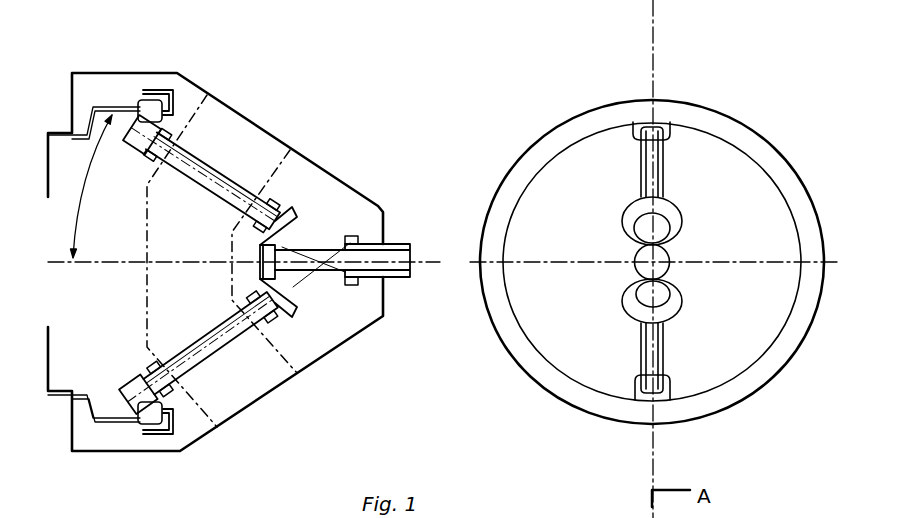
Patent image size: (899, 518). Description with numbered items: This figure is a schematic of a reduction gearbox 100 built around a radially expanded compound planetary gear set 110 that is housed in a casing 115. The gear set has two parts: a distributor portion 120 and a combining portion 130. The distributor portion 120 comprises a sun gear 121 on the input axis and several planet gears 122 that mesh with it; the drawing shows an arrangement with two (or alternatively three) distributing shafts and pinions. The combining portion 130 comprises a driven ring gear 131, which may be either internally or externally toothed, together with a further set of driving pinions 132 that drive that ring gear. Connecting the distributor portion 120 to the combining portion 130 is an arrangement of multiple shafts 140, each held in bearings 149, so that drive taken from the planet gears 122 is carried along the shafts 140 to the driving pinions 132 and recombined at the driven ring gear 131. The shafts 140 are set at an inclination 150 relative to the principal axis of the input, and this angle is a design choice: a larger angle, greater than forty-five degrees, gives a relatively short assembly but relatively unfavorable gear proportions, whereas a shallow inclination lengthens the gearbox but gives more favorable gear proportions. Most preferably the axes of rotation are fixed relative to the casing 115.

The reduction gearbox 100 is at (240, 114).
The compound planetary gear set 110 is at (123, 386).
The casing 115 is at (292, 372).
The distributor portion 120 is at (333, 175).
The sun gear 121 is at (295, 248).
The planet gears 122 is at (293, 309).
The combining portion 130 is at (135, 72).
The driven ring gear 131 is at (155, 103).
The driving pinions 132 is at (150, 374).
The connecting shafts 140 is at (226, 202).
The bearings 149 is at (235, 297).
The inclination 150 is at (76, 186).